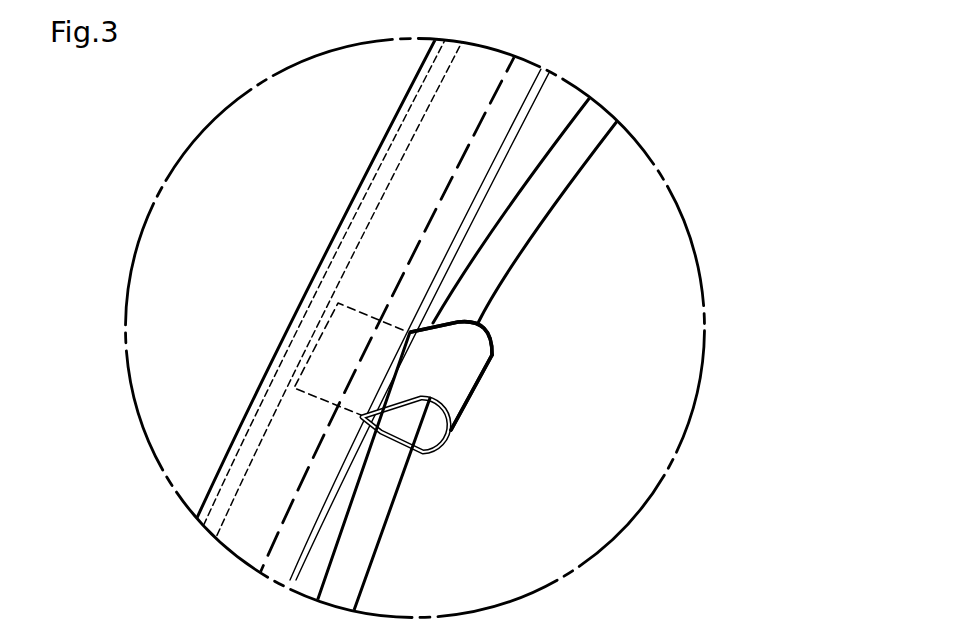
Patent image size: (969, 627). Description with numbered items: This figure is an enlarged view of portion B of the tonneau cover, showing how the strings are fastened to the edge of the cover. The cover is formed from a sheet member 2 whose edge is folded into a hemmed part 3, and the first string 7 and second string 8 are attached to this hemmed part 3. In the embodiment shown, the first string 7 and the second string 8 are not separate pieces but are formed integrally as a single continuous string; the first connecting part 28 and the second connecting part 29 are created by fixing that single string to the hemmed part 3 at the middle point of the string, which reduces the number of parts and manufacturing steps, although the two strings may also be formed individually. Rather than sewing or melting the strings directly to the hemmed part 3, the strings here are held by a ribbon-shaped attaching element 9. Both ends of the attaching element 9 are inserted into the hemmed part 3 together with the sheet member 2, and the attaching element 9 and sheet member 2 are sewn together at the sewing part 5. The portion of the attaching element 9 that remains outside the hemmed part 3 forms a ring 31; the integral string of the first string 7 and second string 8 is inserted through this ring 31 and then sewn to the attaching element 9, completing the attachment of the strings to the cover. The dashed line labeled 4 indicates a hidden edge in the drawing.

The sheet member 2 is at (602, 410).
The hemmed part 3 is at (285, 443).
The sash flange 4 is at (413, 133).
The sewing part 5 is at (422, 230).
The first string 7 is at (560, 165).
The second string 8 is at (357, 527).
The attaching element 9 is at (433, 373).
The first connecting part 28 is at (453, 315).
The second connecting part 29 is at (413, 444).
The ring 31 is at (486, 369).
The portion B is at (690, 186).